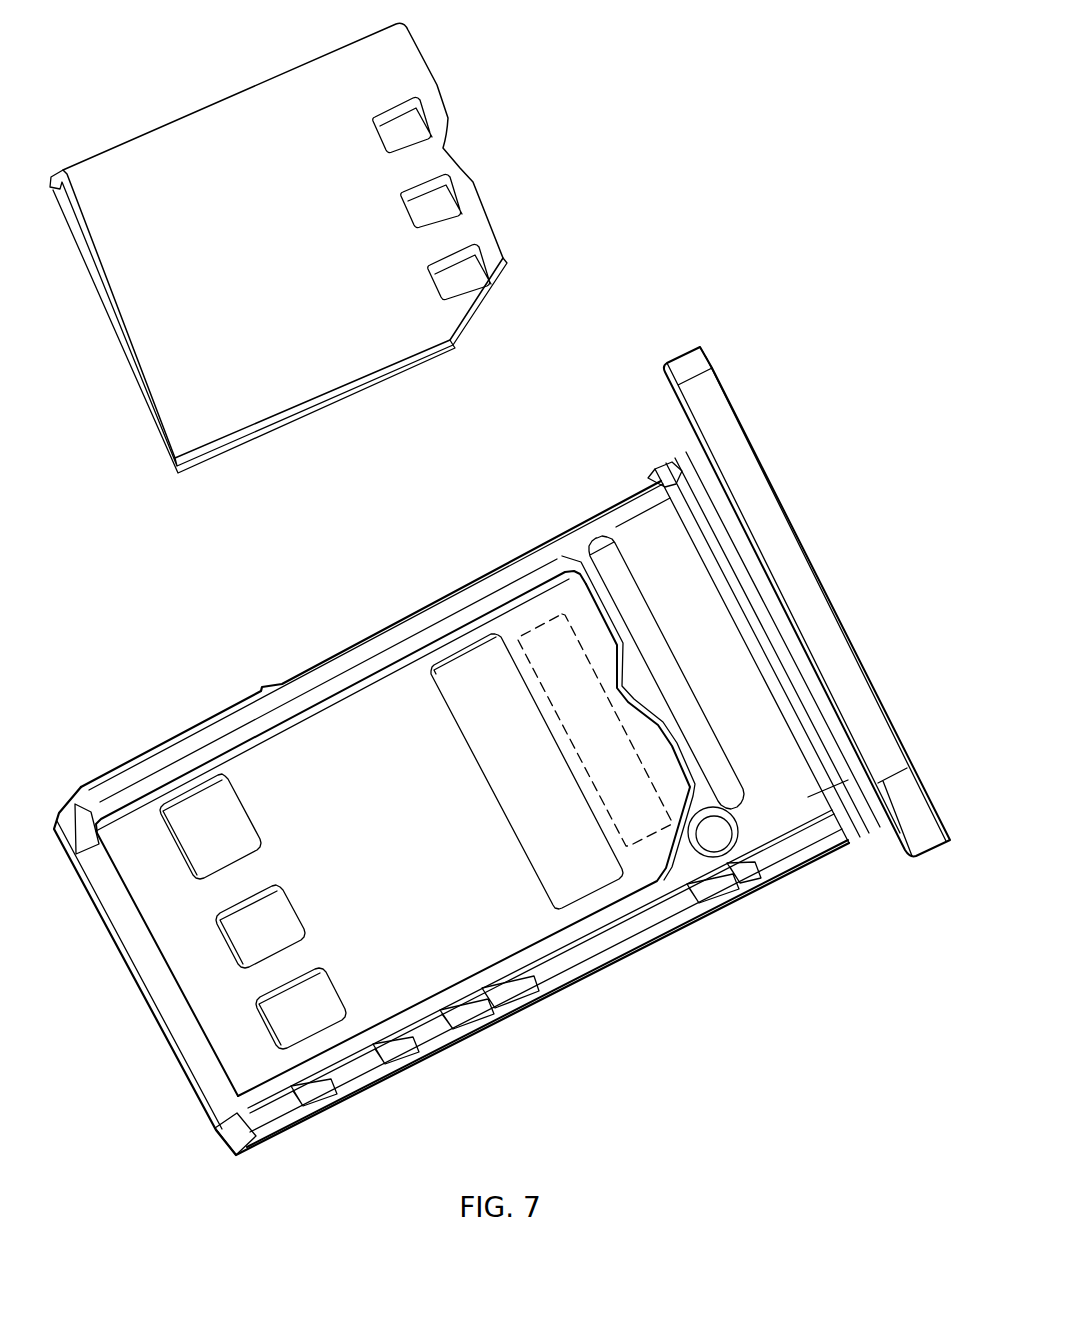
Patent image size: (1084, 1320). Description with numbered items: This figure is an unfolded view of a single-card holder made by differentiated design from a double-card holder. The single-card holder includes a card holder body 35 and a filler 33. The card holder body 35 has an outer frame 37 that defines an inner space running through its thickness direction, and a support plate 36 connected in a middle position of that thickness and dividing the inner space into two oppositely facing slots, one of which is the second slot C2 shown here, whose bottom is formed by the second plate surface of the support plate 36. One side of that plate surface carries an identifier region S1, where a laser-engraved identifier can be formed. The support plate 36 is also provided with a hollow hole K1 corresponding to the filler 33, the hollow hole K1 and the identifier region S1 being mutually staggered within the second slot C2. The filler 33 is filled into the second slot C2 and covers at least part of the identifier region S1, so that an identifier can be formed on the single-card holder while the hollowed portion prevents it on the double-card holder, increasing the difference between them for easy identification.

The filler 33 is at (205, 180).
The card holder body 35 is at (502, 751).
The support plate 36 is at (272, 785).
The outer frame 37 is at (155, 760).
The second slot C2 is at (368, 715).
The hollow hole K1 is at (463, 668).
The identifier region S1 is at (533, 620).